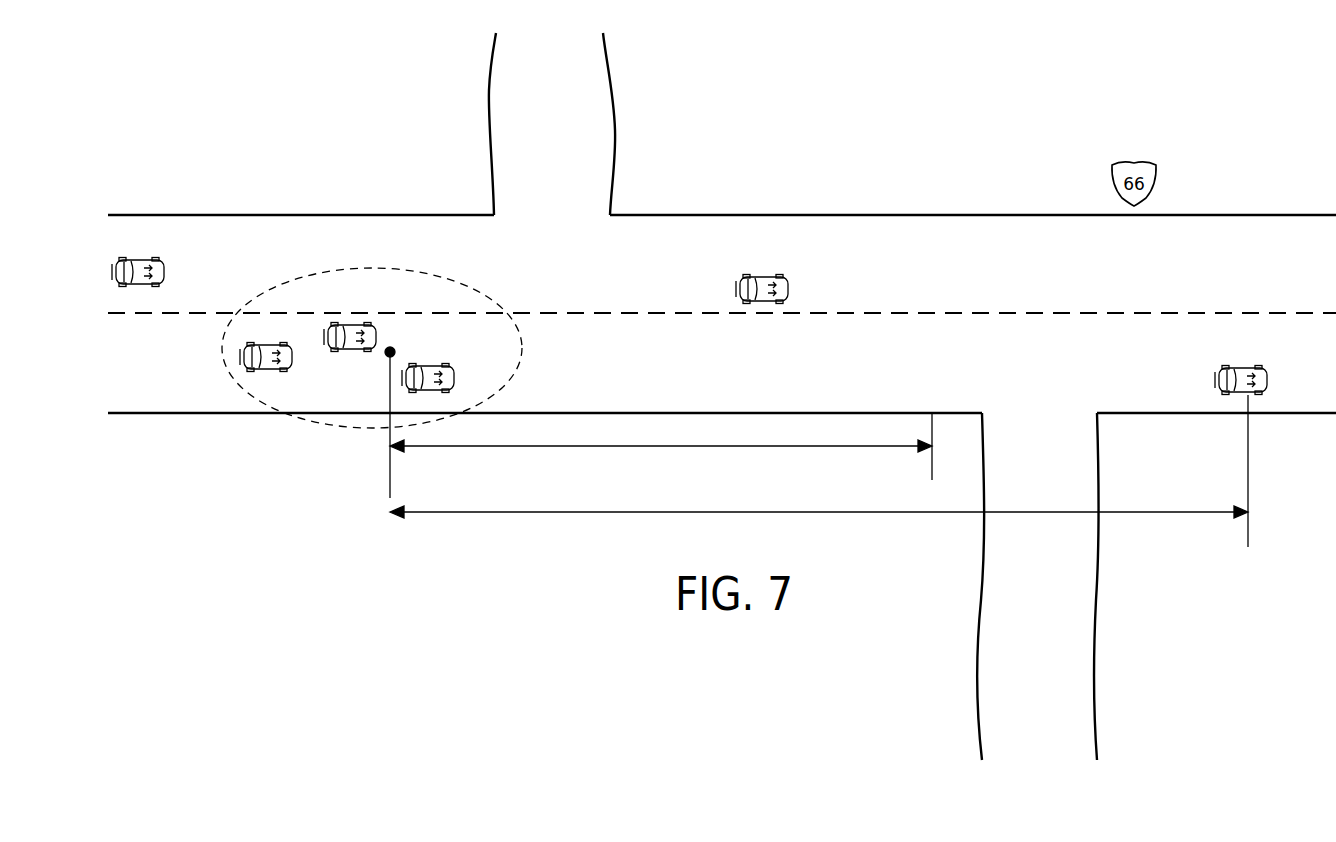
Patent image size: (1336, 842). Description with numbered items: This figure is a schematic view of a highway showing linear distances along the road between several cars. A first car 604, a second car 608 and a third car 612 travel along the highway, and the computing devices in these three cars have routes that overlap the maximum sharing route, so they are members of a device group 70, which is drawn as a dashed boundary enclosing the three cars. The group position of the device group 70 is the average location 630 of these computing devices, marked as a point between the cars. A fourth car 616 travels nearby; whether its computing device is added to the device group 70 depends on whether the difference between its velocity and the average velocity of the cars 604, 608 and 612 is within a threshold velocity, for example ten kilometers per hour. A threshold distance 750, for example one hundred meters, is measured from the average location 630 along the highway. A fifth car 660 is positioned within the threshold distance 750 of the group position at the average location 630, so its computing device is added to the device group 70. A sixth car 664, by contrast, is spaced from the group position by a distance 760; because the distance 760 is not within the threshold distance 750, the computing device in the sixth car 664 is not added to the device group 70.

The device group 70 is at (323, 428).
The first car 604 is at (437, 367).
The second car 608 is at (357, 323).
The third car 612 is at (257, 343).
The fourth car 616 is at (167, 273).
The average location 630 is at (388, 358).
The fifth car 660 is at (787, 284).
The sixth car 664 is at (1262, 366).
The threshold distance 750 is at (490, 448).
The distance 760 is at (620, 514).